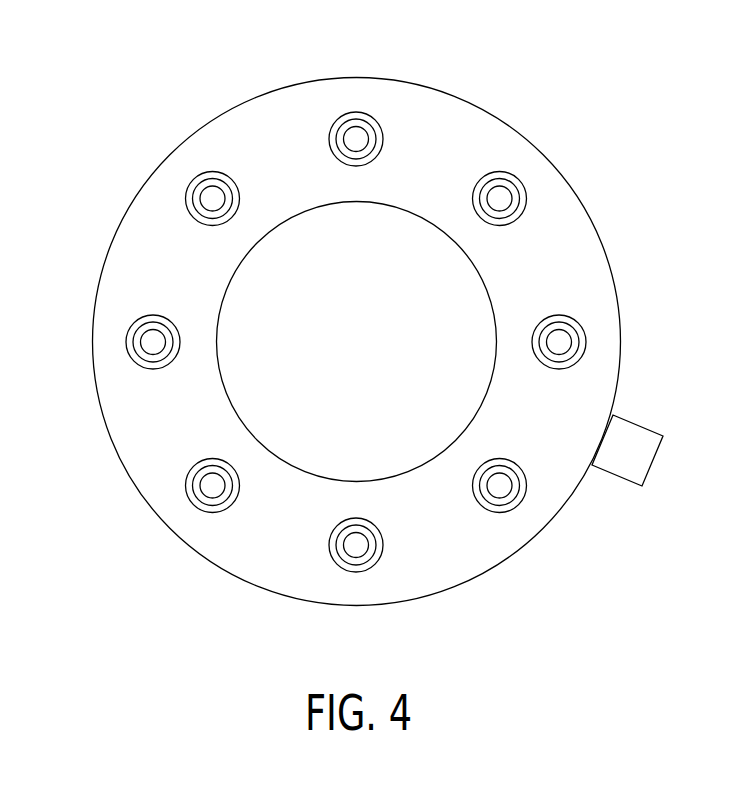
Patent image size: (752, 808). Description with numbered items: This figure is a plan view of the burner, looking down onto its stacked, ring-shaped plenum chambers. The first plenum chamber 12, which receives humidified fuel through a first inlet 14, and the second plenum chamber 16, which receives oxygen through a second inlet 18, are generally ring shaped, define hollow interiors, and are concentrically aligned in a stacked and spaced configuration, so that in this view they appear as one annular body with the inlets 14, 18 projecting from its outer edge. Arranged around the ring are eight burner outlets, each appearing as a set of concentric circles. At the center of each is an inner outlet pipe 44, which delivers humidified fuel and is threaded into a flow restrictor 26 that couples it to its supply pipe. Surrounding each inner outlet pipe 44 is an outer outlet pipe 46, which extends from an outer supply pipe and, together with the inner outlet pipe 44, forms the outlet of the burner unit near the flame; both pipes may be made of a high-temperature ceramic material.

The first plenum chamber 12 is at (334, 342).
The second plenum chamber 16 is at (132, 462).
The first inlet 14 is at (634, 422).
The second inlet 18 is at (630, 430).
The flow restrictor 26 is at (372, 126).
The inner outlet pipe 44 is at (352, 138).
The outer outlet pipe 46 is at (352, 112).